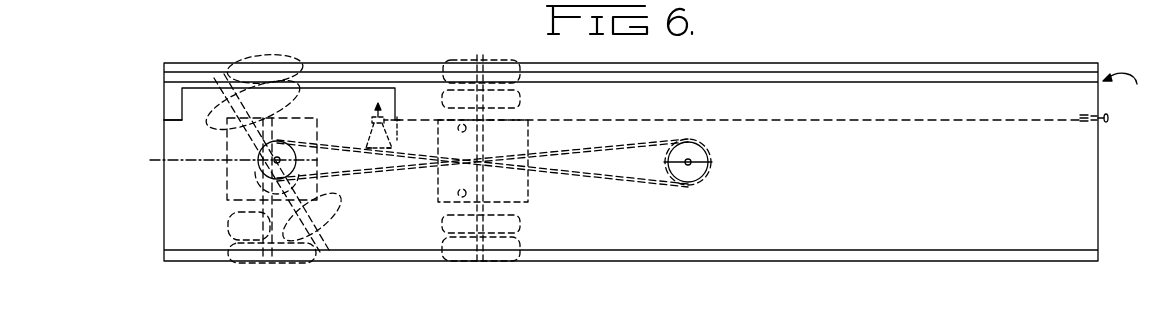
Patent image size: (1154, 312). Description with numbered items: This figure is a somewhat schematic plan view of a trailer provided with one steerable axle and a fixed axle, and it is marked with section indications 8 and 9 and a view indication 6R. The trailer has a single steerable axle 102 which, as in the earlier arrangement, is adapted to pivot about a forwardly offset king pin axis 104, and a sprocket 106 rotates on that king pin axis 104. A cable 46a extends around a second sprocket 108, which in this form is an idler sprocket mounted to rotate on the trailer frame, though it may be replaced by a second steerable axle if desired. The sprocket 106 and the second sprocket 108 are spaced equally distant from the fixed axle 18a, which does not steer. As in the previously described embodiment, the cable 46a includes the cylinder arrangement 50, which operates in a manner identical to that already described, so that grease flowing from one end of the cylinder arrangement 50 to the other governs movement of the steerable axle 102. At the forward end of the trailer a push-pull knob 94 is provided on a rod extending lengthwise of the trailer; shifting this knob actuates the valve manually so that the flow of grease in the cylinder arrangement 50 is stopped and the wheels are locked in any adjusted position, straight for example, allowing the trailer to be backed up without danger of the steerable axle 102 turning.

The view direction indicator 6R is at (160, 119).
The section line 8- 8 is at (150, 144).
The section line 9- 9 is at (638, 160).
The king pin axis 104 is at (257, 153).
The sprocket 106 is at (254, 174).
The steerable axle 102 is at (327, 261).
The fixed axle 18a is at (477, 262).
The cable 46a is at (391, 175).
The cylinder arrangement 50 is at (397, 140).
The second sprocket 108 is at (699, 151).
The push-pull knob 94 is at (1108, 110).